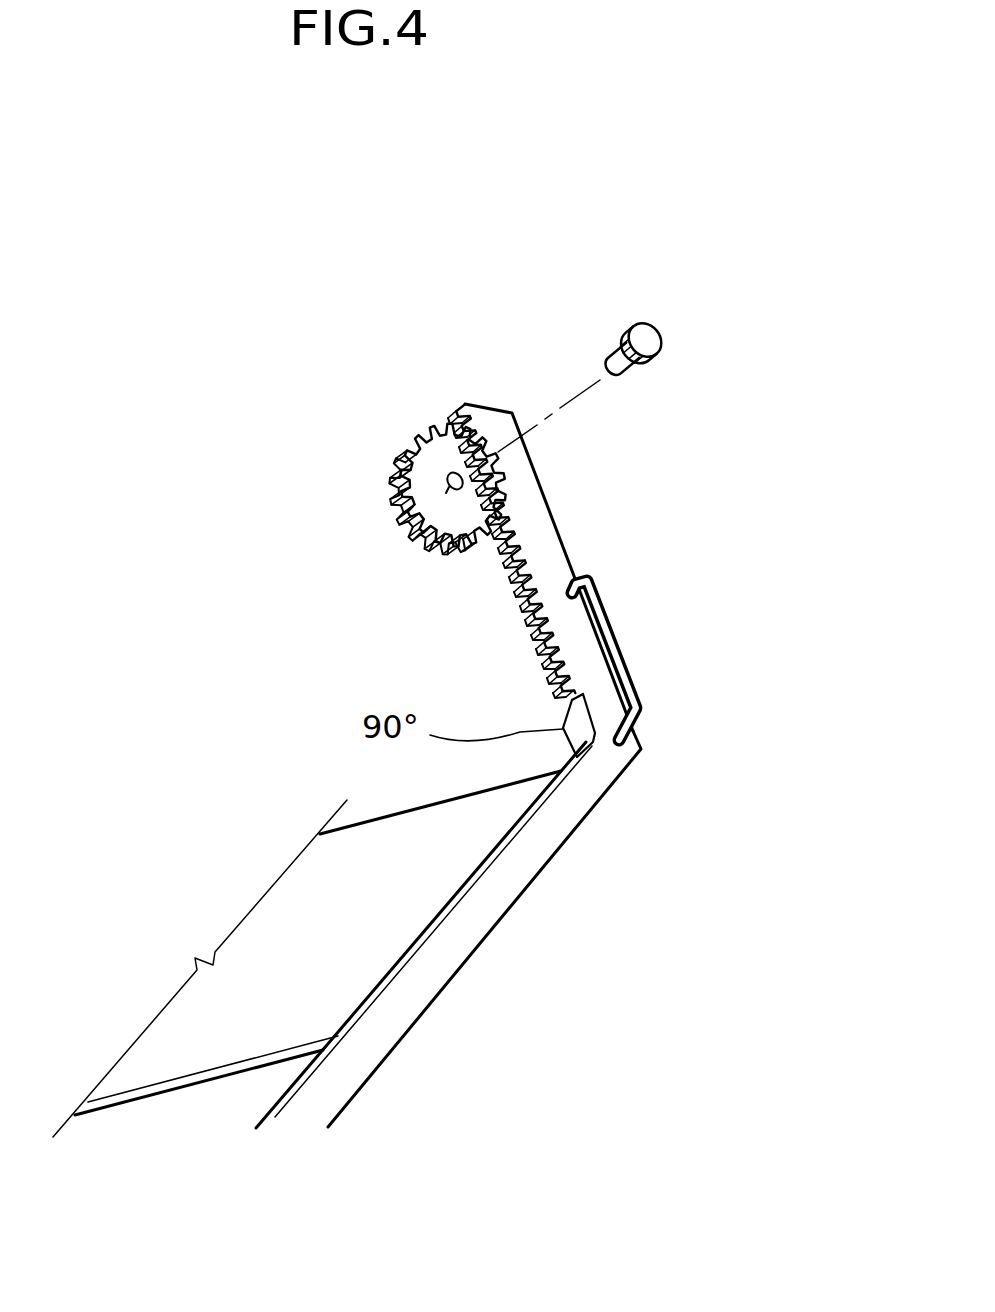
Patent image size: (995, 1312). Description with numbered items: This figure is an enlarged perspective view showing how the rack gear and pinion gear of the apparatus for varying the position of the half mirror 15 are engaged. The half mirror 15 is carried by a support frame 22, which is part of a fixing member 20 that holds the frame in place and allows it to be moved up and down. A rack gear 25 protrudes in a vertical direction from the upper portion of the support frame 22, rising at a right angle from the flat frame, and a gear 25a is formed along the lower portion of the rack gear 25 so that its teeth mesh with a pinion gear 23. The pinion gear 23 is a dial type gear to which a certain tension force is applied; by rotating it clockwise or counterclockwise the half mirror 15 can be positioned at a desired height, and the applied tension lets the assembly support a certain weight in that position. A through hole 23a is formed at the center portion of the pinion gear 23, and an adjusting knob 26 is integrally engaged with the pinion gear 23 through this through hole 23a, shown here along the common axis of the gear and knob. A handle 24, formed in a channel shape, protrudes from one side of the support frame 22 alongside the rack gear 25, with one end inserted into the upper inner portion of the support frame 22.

The half mirror 15 is at (333, 895).
The fixing member 20 is at (521, 766).
The support frame 22 is at (465, 922).
The pinion gear 23 is at (343, 403).
The through hole 23a is at (457, 478).
The handle 24 is at (628, 643).
The rack gear 25 is at (499, 580).
The gear 25a is at (512, 577).
The adjusting knob 26 is at (652, 342).